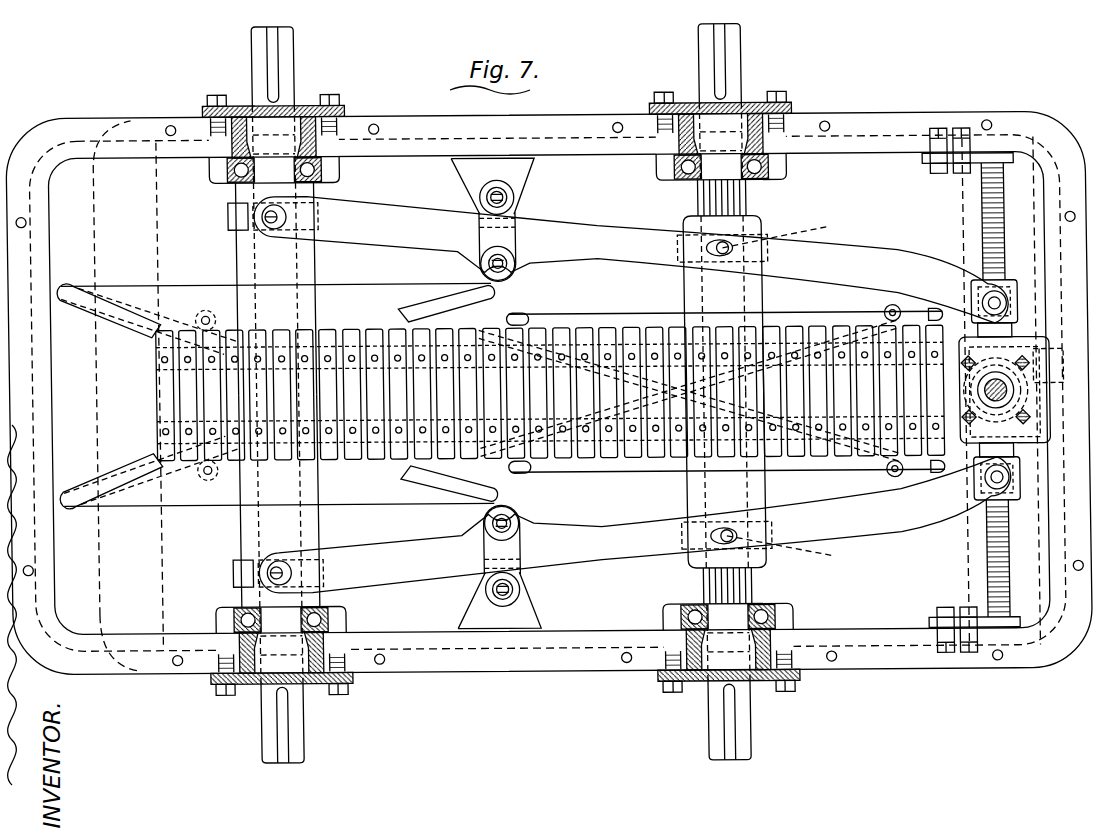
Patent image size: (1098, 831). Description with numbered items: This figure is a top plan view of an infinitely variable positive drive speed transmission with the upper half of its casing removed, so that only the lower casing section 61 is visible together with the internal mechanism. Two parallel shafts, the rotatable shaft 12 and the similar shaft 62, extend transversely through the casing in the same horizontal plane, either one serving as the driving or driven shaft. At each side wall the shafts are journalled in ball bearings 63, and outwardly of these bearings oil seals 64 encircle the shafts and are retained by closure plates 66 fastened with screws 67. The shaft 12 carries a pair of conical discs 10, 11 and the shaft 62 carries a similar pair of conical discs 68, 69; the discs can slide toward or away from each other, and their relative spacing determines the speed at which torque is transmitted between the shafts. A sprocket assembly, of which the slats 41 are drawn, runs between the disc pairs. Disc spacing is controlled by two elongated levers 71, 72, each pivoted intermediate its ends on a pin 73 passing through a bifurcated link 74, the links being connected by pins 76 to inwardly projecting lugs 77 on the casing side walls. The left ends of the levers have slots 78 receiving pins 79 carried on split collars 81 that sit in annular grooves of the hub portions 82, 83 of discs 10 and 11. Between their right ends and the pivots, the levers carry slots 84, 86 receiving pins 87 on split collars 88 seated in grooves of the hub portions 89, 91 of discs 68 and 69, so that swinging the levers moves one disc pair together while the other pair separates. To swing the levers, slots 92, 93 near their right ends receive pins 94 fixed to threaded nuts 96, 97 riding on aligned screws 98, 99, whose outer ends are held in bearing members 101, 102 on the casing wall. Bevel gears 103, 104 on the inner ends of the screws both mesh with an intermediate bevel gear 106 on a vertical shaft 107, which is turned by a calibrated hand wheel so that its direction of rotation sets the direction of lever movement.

The conical disc 10 is at (374, 291).
The conical disc 11 is at (362, 491).
The rotatable shaft 12 is at (288, 65).
The slats 41 is at (582, 458).
The lower casing section 61 is at (67, 125).
The shaft 62 is at (739, 46).
The ball bearings 63 is at (233, 180).
The oil seals 64 is at (249, 126).
The closure plates 66 is at (307, 105).
The screws 67 is at (338, 95).
The conical disc 68 is at (611, 320).
The conical disc 69 is at (626, 468).
The lever 71 is at (600, 228).
The lever 72 is at (598, 555).
The pin 73 is at (519, 273).
The bifurcated link 74 is at (513, 237).
The pins 76 is at (486, 197).
The lugs 77 is at (524, 173).
The slots 78 is at (266, 215).
The pins 79 is at (286, 211).
The split collars 81 is at (233, 211).
The hub portion 82 is at (240, 255).
The hub portion 83 is at (242, 513).
The slot 84 is at (736, 244).
The slot 86 is at (768, 534).
The pins 87 is at (723, 248).
The split collars 88 is at (816, 242).
The hub portion 89 is at (762, 296).
The hub portion 91 is at (761, 481).
The slot 92 is at (979, 281).
The slot 93 is at (982, 503).
The pins 94 is at (1007, 286).
The threaded nut 96 is at (1019, 288).
The threaded nut 97 is at (999, 508).
The screw 98 is at (983, 203).
The screw 99 is at (988, 575).
The bearing member 101 is at (926, 160).
The bearing member 102 is at (927, 621).
The bevel gear 103 is at (1058, 354).
The bevel gear 104 is at (1050, 434).
The intermediate bevel gear 106 is at (1061, 376).
The vertical shaft 107 is at (1007, 400).